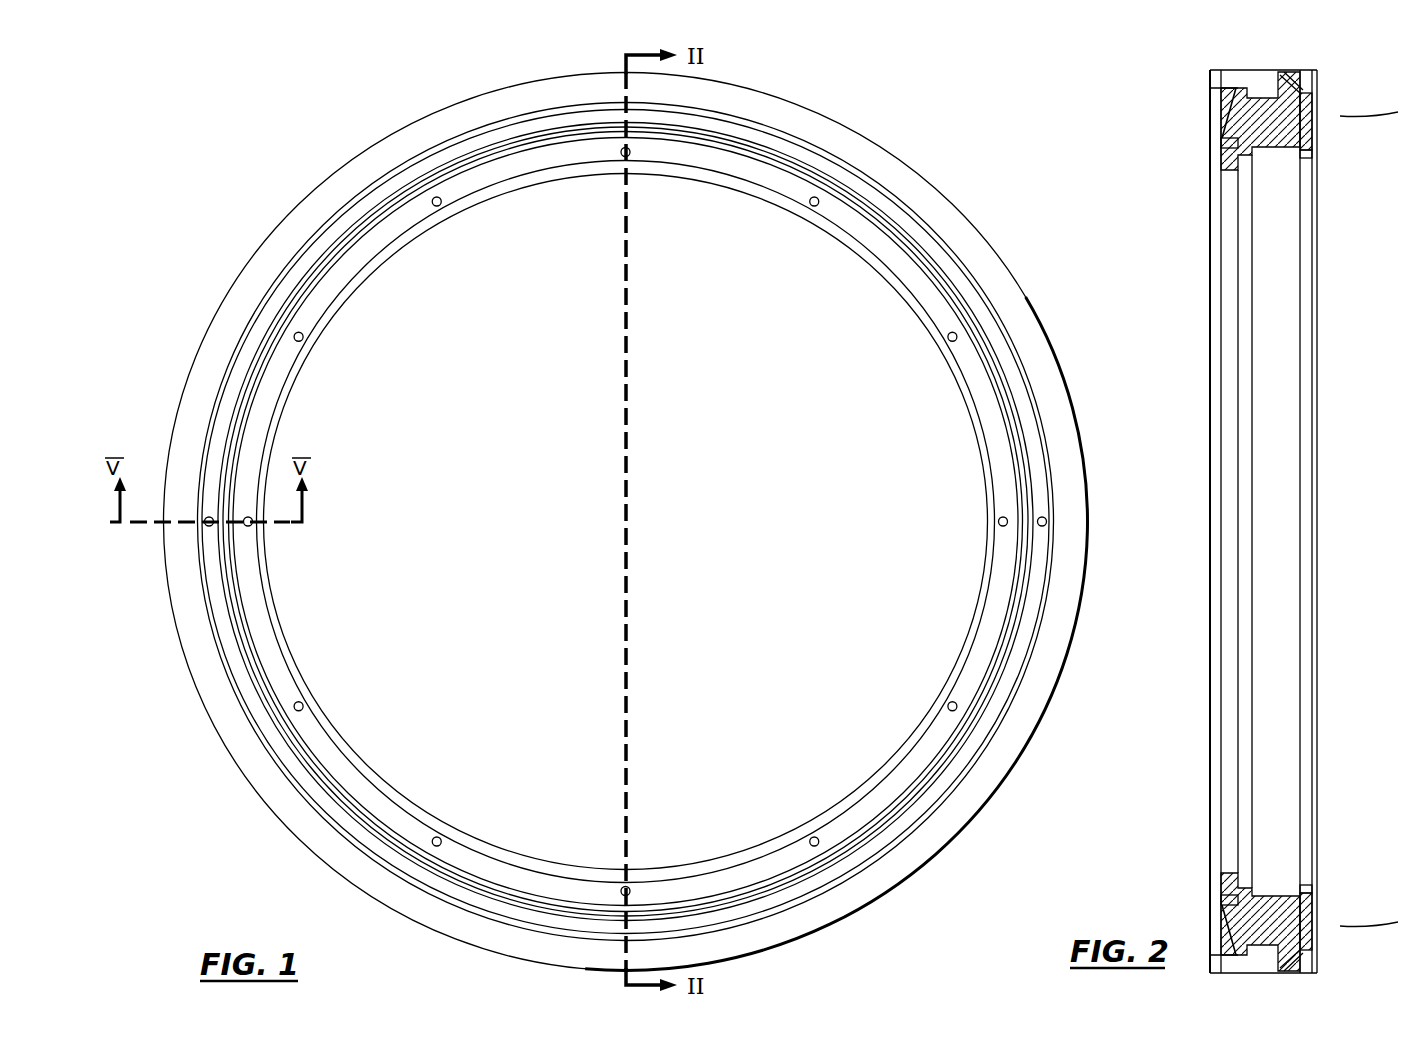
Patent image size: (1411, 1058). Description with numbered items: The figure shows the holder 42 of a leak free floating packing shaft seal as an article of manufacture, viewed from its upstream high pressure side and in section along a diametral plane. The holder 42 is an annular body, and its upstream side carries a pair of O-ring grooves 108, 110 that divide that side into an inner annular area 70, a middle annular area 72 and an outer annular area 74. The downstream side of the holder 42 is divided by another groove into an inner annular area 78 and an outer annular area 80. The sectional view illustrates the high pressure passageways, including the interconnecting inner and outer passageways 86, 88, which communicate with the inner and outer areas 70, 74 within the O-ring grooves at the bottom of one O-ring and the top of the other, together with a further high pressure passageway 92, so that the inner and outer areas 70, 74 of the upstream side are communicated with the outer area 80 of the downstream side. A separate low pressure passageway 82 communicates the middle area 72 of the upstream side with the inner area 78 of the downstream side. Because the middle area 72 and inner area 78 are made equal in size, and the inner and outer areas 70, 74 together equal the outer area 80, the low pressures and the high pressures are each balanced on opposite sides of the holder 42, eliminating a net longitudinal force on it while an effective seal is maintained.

In FIG. 1, the holder 42 is at (289, 156).
In FIG. 2, the holder 42 is at (1274, 133).
In FIG. 1, the inner annular area 70 is at (993, 362).
In FIG. 2, the inner annular area 70 is at (1311, 124).
In FIG. 1, the middle annular area 72 is at (963, 287).
In FIG. 2, the middle annular area 72 is at (1306, 104).
In FIG. 1, the outer annular area 74 is at (945, 215).
In FIG. 2, the outer annular area 74 is at (1318, 94).
In FIG. 2, the inner annular area 78 is at (1225, 144).
In FIG. 2, the outer annular area 80 is at (1213, 92).
In FIG. 2, the passageway 82 is at (1375, 513).
In FIG. 2, the inner passageway 86 is at (1306, 153).
In FIG. 2, the outer passageway 88 is at (1290, 76).
In FIG. 2, the high pressure passageway 92 is at (1222, 112).
In FIG. 1, the O-ring groove 108 is at (882, 215).
In FIG. 1, the O-ring groove 110 is at (828, 152).